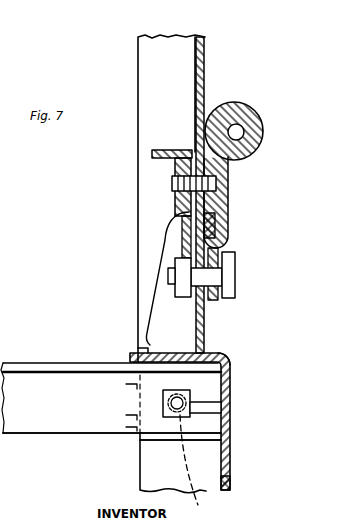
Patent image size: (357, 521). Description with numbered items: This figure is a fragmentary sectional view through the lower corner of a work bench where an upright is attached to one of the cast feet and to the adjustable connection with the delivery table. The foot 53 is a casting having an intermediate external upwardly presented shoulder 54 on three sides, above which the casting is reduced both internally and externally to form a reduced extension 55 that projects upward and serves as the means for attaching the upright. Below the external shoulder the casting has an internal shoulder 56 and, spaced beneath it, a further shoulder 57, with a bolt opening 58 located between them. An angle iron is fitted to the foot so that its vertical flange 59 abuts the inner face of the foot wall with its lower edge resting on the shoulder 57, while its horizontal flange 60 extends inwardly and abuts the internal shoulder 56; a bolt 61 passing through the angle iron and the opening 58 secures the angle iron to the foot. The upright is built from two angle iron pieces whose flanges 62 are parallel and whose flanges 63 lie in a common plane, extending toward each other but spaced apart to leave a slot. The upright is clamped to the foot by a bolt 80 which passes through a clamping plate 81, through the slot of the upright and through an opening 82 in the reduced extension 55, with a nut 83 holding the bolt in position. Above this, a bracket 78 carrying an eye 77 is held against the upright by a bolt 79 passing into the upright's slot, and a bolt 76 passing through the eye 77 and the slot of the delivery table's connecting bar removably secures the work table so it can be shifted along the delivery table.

The foot 53 is at (155, 470).
The external shoulder 54 is at (221, 352).
The reduced extension 55 is at (196, 321).
The internal shoulder 56 is at (148, 353).
The shoulder 57 is at (155, 437).
The bolt opening 58 is at (205, 468).
The vertical flange 59 is at (63, 432).
The horizontal flange 60 is at (65, 362).
The bolt 61 is at (186, 402).
The flange 62 is at (150, 65).
The flange 63 is at (205, 70).
The bolt 76 is at (252, 160).
The eye 77 is at (240, 132).
The bracket 78 is at (218, 215).
The bolt 79 is at (216, 190).
The bolt 80 is at (235, 275).
The clamping plate 81 is at (235, 256).
The opening 82 is at (190, 255).
The nut 83 is at (177, 283).